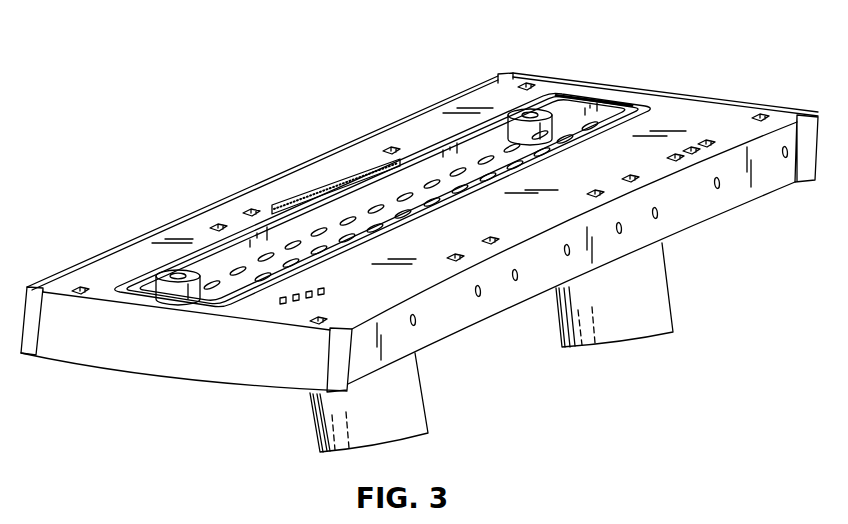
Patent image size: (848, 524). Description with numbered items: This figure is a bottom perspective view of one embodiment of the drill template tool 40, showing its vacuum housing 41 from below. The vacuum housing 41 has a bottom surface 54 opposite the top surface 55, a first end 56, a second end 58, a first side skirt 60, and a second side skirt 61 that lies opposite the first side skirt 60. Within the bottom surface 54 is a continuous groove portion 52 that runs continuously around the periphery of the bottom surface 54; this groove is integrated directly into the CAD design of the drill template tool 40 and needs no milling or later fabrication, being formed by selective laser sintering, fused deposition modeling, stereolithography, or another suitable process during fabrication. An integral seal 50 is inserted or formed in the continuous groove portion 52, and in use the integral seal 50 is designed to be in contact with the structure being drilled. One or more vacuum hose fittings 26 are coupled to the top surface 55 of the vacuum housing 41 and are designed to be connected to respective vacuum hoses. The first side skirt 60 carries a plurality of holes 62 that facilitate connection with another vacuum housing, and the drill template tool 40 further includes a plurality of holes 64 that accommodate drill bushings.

The vacuum hose fittings 26 is at (313, 435).
The drill template tool 40 is at (371, 88).
The vacuum housing 41 is at (461, 96).
The integral seal 50 is at (311, 186).
The continuous groove portion 52 is at (570, 93).
The bottom surface 54 is at (673, 118).
The top surface 55 is at (710, 222).
The first end 56 is at (778, 110).
The second end 58 is at (237, 373).
The first side skirt 60 is at (448, 317).
The second side skirt 61 is at (104, 263).
The holes 62 is at (480, 300).
The holes 64 is at (378, 210).